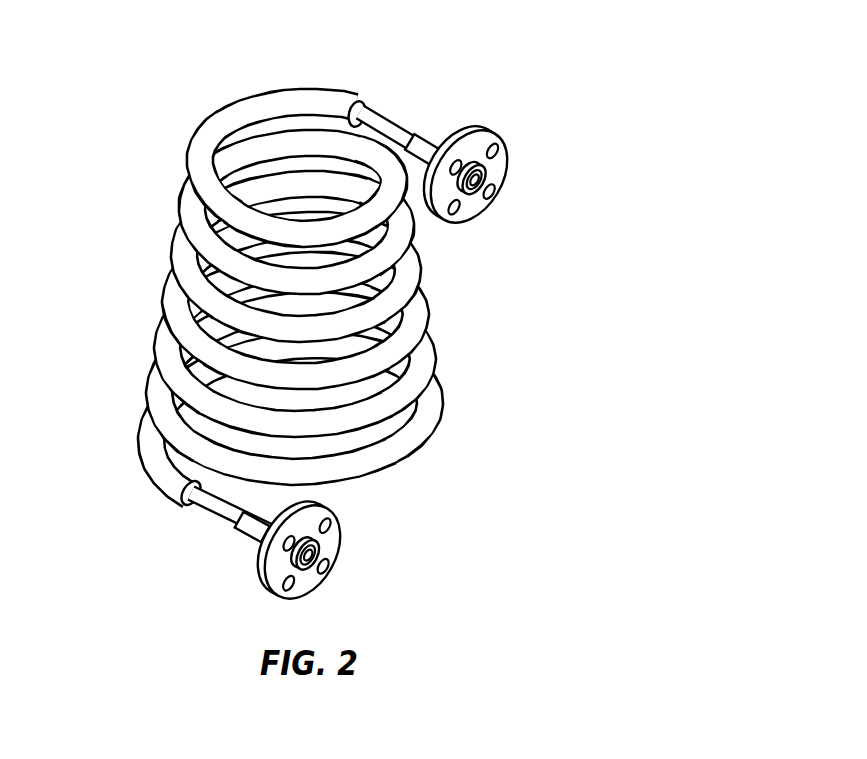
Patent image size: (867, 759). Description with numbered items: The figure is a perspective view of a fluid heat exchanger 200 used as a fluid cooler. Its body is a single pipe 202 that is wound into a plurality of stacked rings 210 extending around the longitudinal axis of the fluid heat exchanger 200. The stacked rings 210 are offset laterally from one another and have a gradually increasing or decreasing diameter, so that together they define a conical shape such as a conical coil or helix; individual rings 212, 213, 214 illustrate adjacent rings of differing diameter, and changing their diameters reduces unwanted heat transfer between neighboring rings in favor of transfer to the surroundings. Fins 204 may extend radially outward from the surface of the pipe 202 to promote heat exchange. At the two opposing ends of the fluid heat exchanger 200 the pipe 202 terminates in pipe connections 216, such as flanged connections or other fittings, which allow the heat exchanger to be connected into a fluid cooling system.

The fluid heat exchanger 200 is at (398, 320).
The pipe 202 is at (399, 128).
The fins 204 is at (364, 102).
The stacked rings 210 is at (306, 272).
The ring 212 is at (414, 440).
The ring 213 is at (427, 372).
The ring 214 is at (285, 141).
The pipe connections 216 is at (581, 266).